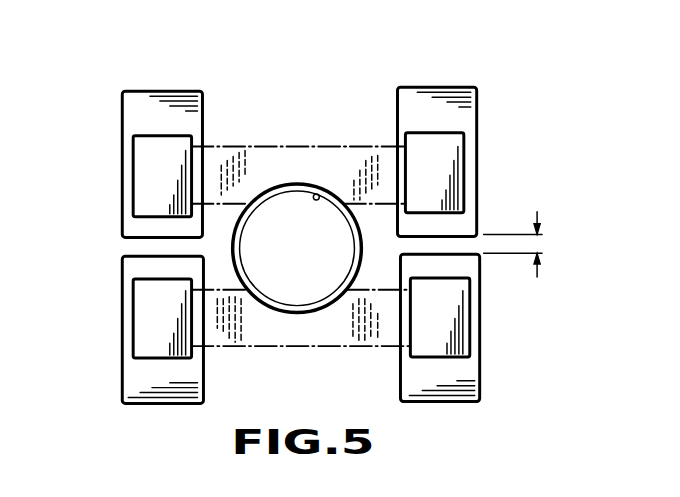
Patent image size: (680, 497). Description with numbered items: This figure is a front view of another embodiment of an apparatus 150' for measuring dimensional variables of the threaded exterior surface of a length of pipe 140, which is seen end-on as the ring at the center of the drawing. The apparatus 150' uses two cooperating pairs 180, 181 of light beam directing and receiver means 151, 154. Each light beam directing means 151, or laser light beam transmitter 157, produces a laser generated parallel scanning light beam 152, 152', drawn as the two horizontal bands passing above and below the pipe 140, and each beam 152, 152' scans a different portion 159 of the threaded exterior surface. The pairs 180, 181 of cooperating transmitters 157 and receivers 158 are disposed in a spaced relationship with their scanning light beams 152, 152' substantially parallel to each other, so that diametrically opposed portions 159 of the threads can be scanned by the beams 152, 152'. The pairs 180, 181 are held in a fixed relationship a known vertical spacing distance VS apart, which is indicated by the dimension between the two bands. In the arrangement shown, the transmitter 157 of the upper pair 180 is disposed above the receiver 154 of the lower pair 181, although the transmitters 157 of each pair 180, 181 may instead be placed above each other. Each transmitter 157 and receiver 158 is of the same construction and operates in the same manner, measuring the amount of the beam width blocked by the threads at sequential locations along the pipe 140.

The length of pipe 140 is at (318, 194).
The apparatus 150' is at (510, 55).
The light beam directing means 151 is at (130, 347).
The laser generated parallel scanning light beam 152 is at (299, 139).
The laser generated parallel scanning light beam 152' is at (301, 342).
The receiving means 154 is at (145, 170).
The laser light beam transmitter 157 is at (114, 304).
The photodetector receiver 158 is at (114, 110).
The portion of threaded surface 159 is at (237, 213).
The cooperating pair of light beam directing and receiver means 180 is at (497, 118).
The cooperating pair of light beam directing and receiver means 181 is at (498, 307).
The vertical spacing distance VS is at (555, 245).